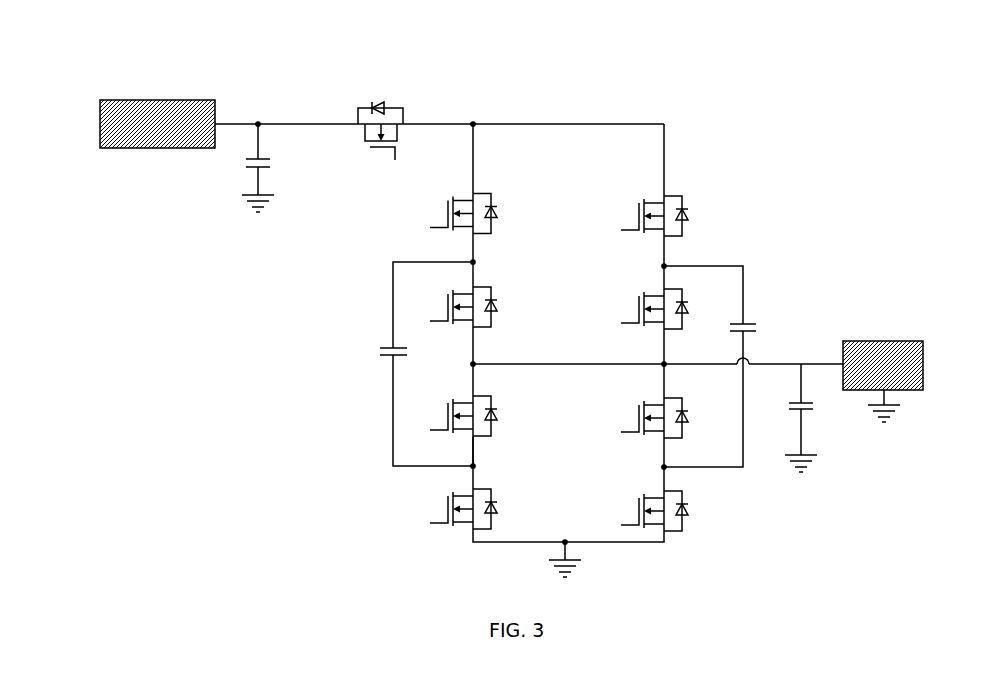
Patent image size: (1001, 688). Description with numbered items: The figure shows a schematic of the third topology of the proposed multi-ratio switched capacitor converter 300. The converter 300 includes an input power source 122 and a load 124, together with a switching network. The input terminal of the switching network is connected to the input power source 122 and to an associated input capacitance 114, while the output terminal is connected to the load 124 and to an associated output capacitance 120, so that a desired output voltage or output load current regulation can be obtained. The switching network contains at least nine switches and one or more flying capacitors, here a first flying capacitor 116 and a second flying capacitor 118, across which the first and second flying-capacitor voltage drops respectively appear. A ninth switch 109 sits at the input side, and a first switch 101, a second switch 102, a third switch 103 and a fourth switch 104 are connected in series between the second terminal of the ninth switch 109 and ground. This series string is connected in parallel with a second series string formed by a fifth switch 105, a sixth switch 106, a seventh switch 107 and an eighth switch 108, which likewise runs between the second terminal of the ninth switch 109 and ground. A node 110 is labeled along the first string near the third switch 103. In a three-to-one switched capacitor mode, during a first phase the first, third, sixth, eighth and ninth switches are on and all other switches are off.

The multi-ratio switched capacitor converter 300 is at (62, 62).
The input power source 122 is at (157, 124).
The input capacitance 114 is at (258, 167).
The ninth switch 109 is at (380, 127).
The first switch 101 is at (445, 214).
The second switch 102 is at (473, 304).
The third switch 103 is at (476, 411).
The fourth switch 104 is at (475, 500).
The fifth switch 105 is at (668, 216).
The sixth switch 106 is at (666, 305).
The seventh switch 107 is at (665, 409).
The eighth switch 108 is at (665, 508).
The node 110 is at (456, 452).
The first flying capacitor 116 is at (412, 363).
The second flying capacitor 118 is at (723, 366).
The output capacitance 120 is at (787, 418).
The load 124 is at (883, 381).